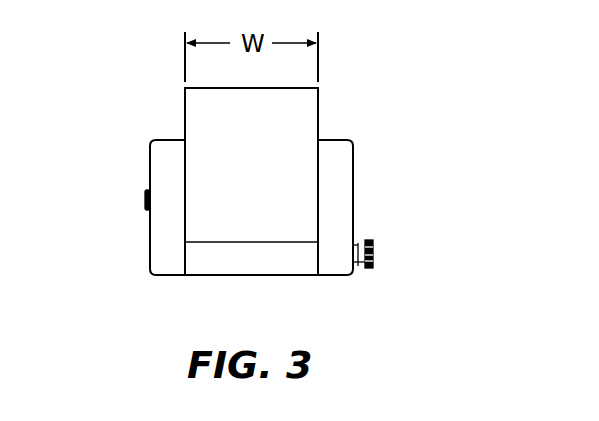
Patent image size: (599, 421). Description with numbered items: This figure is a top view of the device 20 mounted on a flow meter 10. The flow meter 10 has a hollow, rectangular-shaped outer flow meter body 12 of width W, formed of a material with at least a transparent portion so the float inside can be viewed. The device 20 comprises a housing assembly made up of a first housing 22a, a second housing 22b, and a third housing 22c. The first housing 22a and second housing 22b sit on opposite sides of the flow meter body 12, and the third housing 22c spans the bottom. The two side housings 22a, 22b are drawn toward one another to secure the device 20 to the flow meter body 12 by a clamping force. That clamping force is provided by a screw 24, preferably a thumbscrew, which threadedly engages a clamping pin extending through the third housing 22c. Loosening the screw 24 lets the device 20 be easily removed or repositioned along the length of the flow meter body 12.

The flow meter 10 is at (180, 78).
The flow meter body 12 is at (318, 113).
The device 20 is at (405, 272).
The first housing 22a is at (355, 152).
The second housing 22b is at (150, 160).
The third housing 22c is at (203, 272).
The screw 24 is at (372, 238).